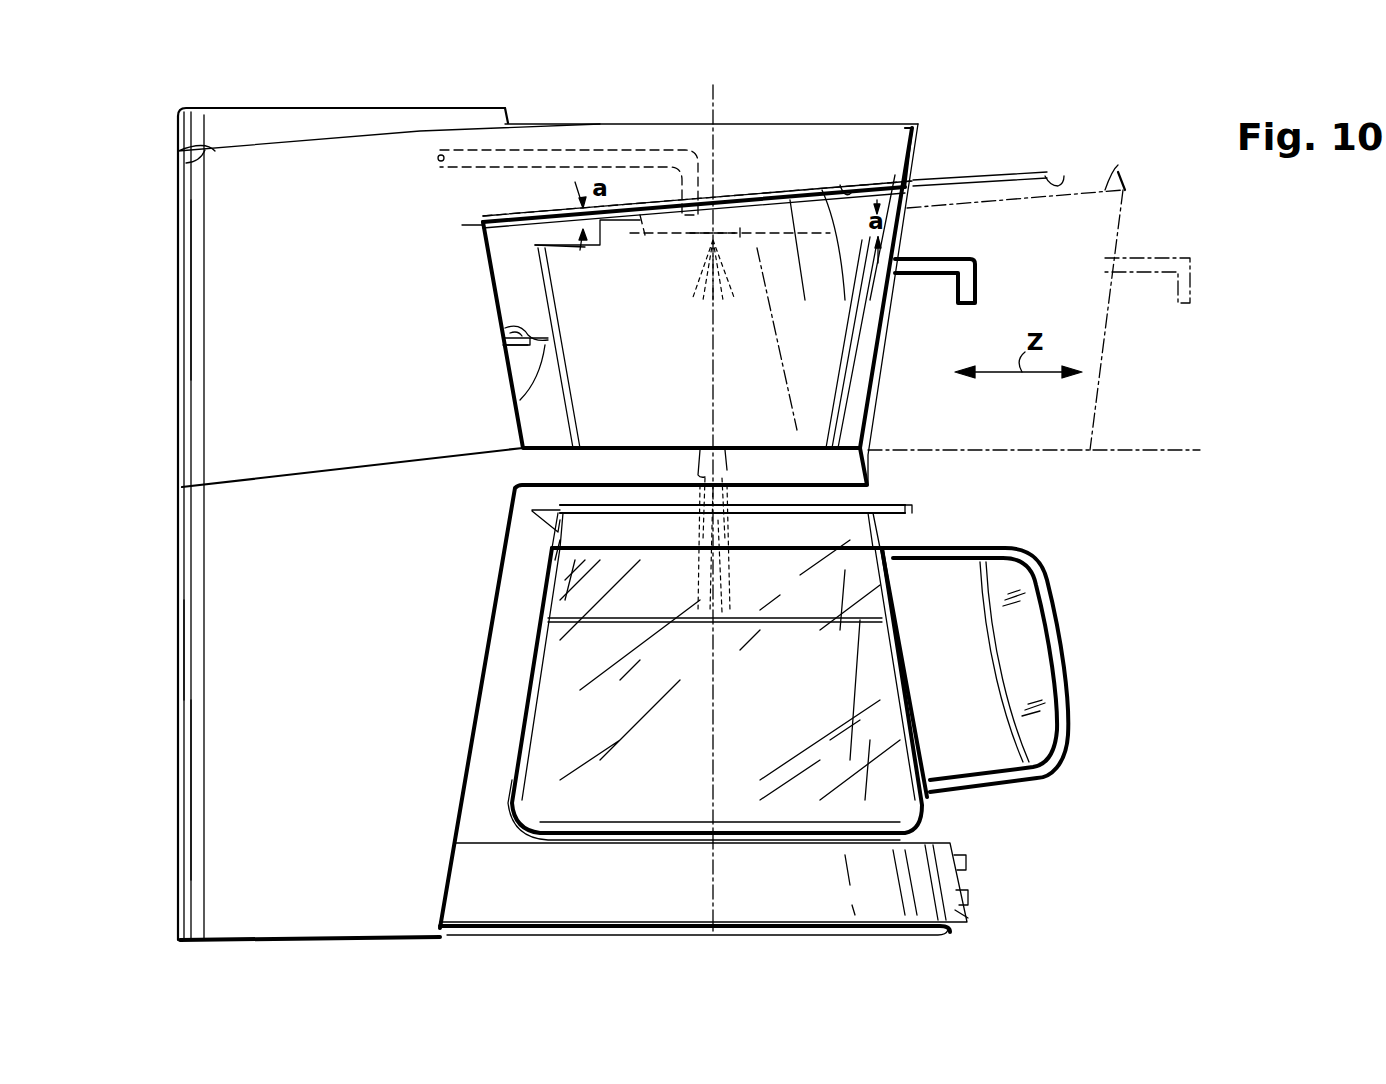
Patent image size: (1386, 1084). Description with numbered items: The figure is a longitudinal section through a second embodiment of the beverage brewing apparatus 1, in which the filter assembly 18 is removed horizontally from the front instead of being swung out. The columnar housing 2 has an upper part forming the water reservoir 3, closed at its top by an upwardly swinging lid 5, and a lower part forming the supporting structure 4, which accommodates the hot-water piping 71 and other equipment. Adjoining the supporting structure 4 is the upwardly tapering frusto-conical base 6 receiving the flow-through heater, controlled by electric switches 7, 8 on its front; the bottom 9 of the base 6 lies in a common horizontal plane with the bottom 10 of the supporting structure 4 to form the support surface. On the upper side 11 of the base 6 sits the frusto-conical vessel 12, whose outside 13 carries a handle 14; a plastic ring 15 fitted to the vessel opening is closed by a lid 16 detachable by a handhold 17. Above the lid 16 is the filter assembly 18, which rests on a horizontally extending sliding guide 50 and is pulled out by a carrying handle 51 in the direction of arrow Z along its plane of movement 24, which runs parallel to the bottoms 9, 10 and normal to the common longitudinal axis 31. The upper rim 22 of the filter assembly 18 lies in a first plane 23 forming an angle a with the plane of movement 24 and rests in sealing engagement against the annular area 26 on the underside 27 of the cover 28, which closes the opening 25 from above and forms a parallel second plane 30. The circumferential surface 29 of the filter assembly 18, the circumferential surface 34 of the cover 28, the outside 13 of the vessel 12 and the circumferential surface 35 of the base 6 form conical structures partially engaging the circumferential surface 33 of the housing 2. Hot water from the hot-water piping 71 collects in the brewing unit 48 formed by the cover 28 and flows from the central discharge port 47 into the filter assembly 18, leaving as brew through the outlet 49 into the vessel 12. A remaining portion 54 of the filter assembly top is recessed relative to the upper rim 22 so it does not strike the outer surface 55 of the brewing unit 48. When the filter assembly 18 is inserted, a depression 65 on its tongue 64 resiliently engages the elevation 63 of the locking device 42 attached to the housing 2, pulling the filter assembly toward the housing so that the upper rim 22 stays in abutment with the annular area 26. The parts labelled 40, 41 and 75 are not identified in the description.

The beverage brewing apparatus 1 is at (155, 417).
The columnar housing 2 is at (172, 592).
The water reservoir 3 is at (200, 283).
The supporting structure 4 is at (200, 795).
The lid 5 is at (310, 110).
The base 6 is at (634, 897).
The electric switch 7 is at (968, 862).
The electric switch 8 is at (970, 895).
The bottom of the base 9 is at (935, 938).
The bottom of the supporting structure 10 is at (200, 941).
The upper side of the base 11 is at (938, 842).
The vessel 12 is at (540, 718).
The outside of the vessel 13 is at (515, 775).
The handle 14 is at (1068, 658).
The plastic ring 15 is at (884, 532).
The lid 16 is at (832, 508).
The handhold 17 is at (910, 510).
The filter assembly 18 is at (890, 345).
The upper rim 22 is at (857, 185).
The first plane 23 is at (1065, 175).
The plane of movement 24 is at (1165, 448).
The opening 25 is at (1127, 178).
The annular area 26 is at (895, 175).
The underside of the cover 27 is at (822, 190).
The cover 28 is at (772, 142).
The circumferential surface of the filter assembly 29 is at (875, 405).
The second plane 30 is at (1020, 172).
The common longitudinal axis 31 is at (713, 100).
The circumferential surface of the housing 33 is at (180, 650).
The circumferential surface of the cover 34 is at (913, 135).
The circumferential surface of the base 35 is at (968, 918).
The tank edge 40 is at (215, 148).
The tank edge 41 is at (200, 163).
The locking device 42 is at (520, 338).
The central discharge port 47 is at (700, 237).
The brewing unit 48 is at (740, 240).
The outlet 49 is at (728, 468).
The sliding guide 50 is at (680, 467).
The carrying handle 51 is at (975, 290).
The remaining portion 54 is at (497, 226).
The outer surface of the brewing unit 55 is at (640, 235).
The elevation 63 is at (530, 350).
The tongue 64 is at (545, 345).
The depression 65 is at (520, 335).
The hot-water piping 71 is at (650, 150).
The housing top edge 75 is at (555, 122).